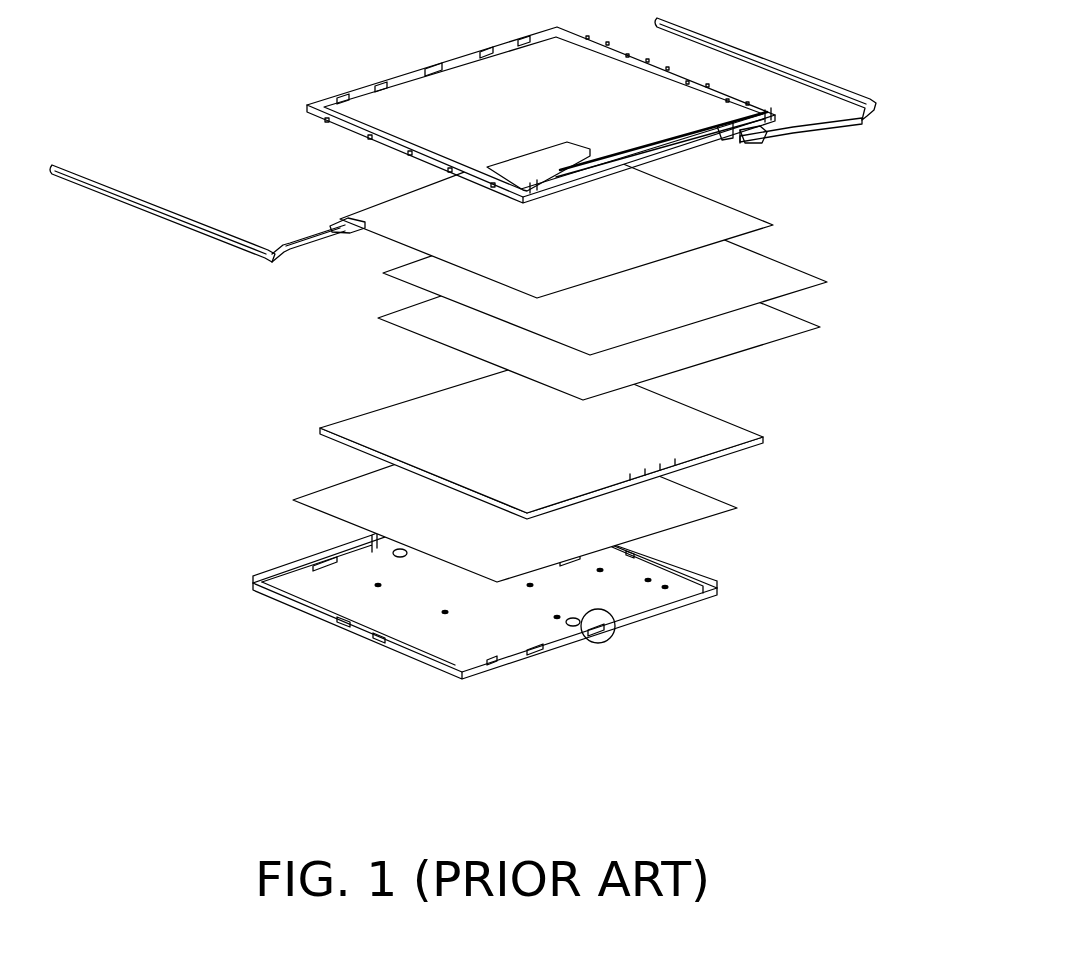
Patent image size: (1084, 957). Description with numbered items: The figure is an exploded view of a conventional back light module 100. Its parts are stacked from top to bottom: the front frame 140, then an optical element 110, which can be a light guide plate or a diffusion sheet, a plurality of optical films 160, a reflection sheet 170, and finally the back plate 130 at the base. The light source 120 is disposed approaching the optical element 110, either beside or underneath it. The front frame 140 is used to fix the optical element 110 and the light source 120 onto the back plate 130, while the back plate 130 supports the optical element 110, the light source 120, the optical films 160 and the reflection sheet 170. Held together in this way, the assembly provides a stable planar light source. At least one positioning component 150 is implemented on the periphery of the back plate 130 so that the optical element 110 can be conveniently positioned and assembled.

The back light module 100 is at (851, 719).
The optical element 110 is at (767, 436).
The light source 120 is at (815, 85).
The back plate 130 is at (717, 588).
The front frame 140 is at (723, 150).
The positioning component 150 is at (613, 636).
The optical films 160 is at (846, 214).
The reflection sheet 170 is at (717, 507).